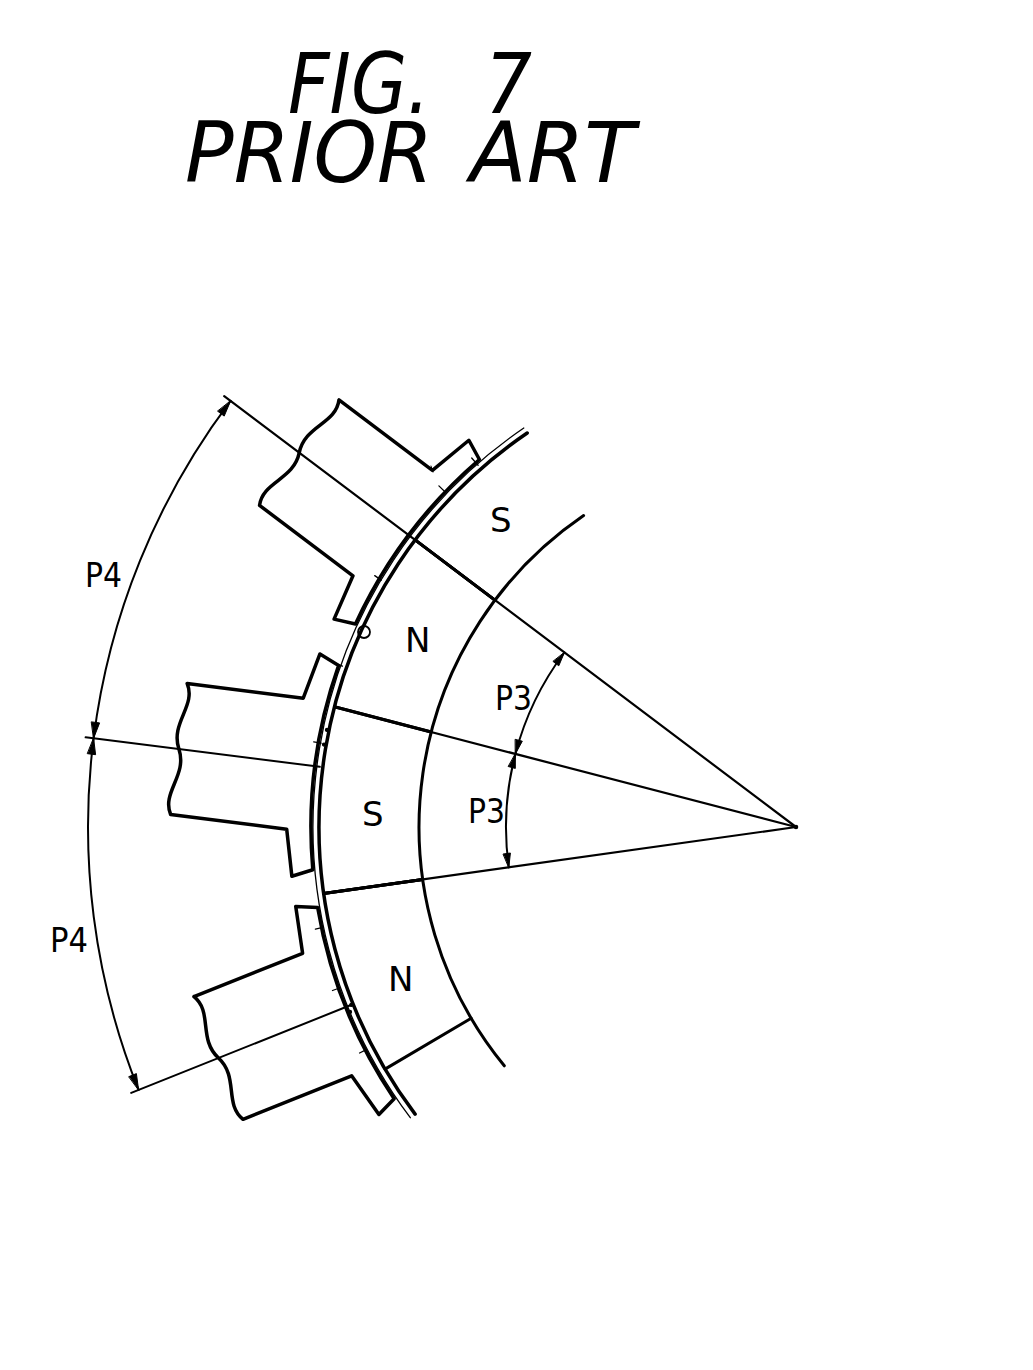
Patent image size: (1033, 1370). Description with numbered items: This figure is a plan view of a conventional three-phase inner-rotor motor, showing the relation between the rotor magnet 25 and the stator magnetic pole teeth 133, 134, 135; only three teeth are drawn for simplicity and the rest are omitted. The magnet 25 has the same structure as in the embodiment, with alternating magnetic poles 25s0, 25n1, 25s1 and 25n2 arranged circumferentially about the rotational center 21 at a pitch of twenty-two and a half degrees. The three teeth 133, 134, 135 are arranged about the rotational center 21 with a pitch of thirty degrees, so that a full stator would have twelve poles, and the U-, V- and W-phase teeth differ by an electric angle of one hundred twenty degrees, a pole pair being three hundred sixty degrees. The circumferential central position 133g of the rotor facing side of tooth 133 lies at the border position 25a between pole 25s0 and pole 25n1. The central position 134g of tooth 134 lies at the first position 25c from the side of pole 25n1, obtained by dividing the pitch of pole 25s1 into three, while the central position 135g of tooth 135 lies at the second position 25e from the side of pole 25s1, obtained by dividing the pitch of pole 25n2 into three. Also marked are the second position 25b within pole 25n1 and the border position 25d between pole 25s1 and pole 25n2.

The rotational center 21 is at (798, 827).
The magnet 25 is at (452, 1146).
The border position 25a is at (413, 538).
The second position 25b is at (358, 620).
The first position 25c is at (327, 730).
The border position 25d is at (327, 893).
The second position 25e is at (352, 1012).
The magnetic pole 25s0 is at (500, 581).
The magnetic pole 25n1 is at (460, 637).
The magnetic pole 25s1 is at (403, 843).
The magnetic pole 25n2 is at (443, 1000).
The magnetic pole teeth 133 is at (368, 436).
The circumferential central position 133g is at (412, 535).
The magnetic pole teeth 134 is at (203, 700).
The circumferential central position 134g is at (320, 770).
The magnetic pole teeth 135 is at (243, 1000).
The circumferential central position 135g is at (350, 1013).